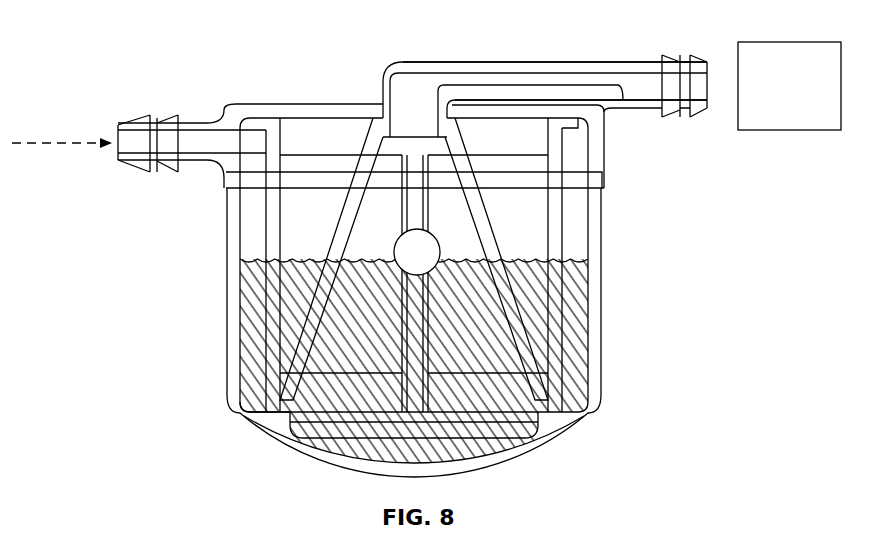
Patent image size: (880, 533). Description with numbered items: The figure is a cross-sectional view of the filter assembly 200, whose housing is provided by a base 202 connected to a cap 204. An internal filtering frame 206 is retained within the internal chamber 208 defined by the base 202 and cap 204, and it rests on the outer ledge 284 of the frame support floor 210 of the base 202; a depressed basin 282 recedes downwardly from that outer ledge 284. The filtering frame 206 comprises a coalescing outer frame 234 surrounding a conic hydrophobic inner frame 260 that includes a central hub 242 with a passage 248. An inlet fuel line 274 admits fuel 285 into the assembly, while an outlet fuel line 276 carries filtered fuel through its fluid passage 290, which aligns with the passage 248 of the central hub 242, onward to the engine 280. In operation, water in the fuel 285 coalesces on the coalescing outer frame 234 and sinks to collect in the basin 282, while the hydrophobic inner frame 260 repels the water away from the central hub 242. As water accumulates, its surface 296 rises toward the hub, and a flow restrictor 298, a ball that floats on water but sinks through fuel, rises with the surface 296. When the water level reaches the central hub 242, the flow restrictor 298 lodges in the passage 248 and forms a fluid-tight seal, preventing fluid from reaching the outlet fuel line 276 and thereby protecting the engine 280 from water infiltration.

The filter assembly 200 is at (160, 55).
The base 202 is at (553, 395).
The cap 204 is at (220, 188).
The internal filtering frame 206 is at (565, 268).
The internal chamber 208 is at (567, 323).
The frame support floor 210 is at (553, 437).
The coalescing outer frame 234 is at (255, 303).
The central hub 242 is at (383, 124).
The passage 248 is at (410, 124).
The conic hydrophobic inner frame 260 is at (503, 252).
The inlet fuel line 274 is at (173, 114).
The outlet fuel line 276 is at (633, 62).
The engine 280 is at (790, 42).
The depressed basin 282 is at (362, 450).
The outer ledge 284 is at (250, 410).
The fuel 285 is at (72, 147).
The fluid passage 290 is at (423, 92).
The surface of the water 296 is at (248, 269).
The flow restrictor 298 is at (404, 262).